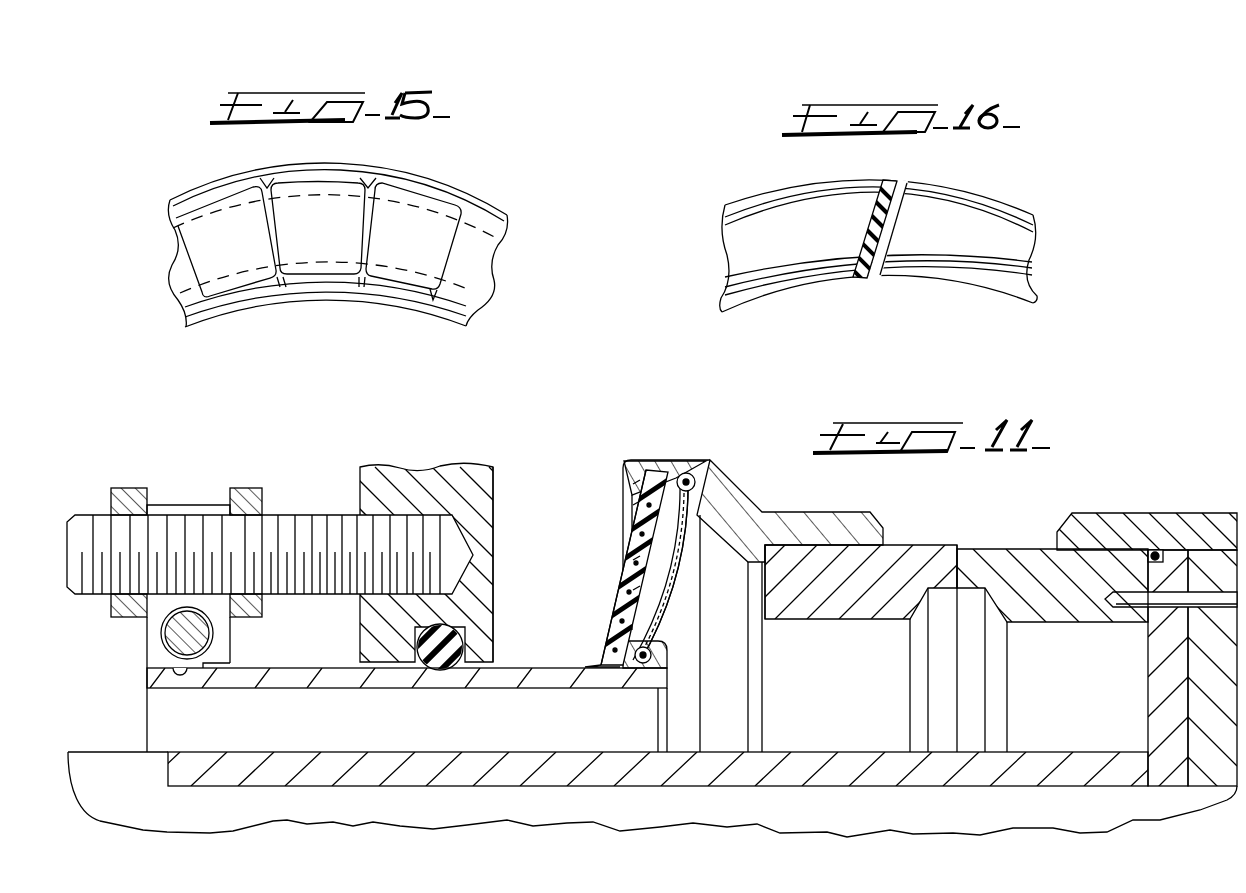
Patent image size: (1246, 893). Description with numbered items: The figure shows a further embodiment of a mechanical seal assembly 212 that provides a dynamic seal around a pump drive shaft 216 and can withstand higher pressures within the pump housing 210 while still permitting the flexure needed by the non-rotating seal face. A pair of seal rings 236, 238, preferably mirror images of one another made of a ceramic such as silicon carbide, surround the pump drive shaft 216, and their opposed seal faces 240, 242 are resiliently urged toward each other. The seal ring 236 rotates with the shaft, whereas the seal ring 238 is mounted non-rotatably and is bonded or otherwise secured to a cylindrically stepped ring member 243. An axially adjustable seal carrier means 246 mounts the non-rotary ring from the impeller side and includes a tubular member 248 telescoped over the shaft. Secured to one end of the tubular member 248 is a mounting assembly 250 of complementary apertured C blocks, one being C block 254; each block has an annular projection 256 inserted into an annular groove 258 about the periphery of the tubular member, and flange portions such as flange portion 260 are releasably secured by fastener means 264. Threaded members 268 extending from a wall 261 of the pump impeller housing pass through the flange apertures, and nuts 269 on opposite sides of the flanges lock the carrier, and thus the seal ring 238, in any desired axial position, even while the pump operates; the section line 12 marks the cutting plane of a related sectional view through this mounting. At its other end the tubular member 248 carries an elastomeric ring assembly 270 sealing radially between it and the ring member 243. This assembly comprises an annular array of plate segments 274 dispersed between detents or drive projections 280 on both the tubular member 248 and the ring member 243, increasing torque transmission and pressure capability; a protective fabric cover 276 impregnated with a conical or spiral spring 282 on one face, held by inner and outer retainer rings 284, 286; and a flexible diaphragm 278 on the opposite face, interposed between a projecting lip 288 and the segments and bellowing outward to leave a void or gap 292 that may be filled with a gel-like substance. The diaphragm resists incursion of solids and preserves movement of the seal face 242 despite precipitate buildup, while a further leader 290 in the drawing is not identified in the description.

In FIG. 11, the pump housing 210 is at (1204, 490).
In FIG. 11, the mechanical seal assembly 212 is at (1058, 503).
In FIG. 11, the pump drive shaft 216 is at (90, 794).
In FIG. 11, the seal ring 236 is at (997, 550).
In FIG. 11, the seal ring 238 is at (820, 612).
In FIG. 11, the seal face 240 is at (953, 575).
In FIG. 11, the seal face 242 is at (957, 548).
In FIG. 15, the cylindrically stepped ring member 243 is at (493, 213).
In FIG. 11, the cylindrically stepped ring member 243 is at (640, 460).
In FIG. 11, the axially adjustable seal carrier means 246 is at (214, 463).
In FIG. 15, the tubular member 248 is at (453, 313).
In FIG. 11, the tubular member 248 is at (293, 682).
In FIG. 11, the mounting assembly 250 is at (118, 671).
In FIG. 11, the C block 254 is at (152, 633).
In FIG. 11, the annular projection 256 is at (200, 667).
In FIG. 11, the annular groove 258 is at (180, 680).
In FIG. 11, the flange portion 260 is at (157, 617).
In FIG. 11, the wall 261 is at (493, 480).
In FIG. 11, the fastener means 264 is at (168, 648).
In FIG. 11, the threaded members 268 is at (330, 512).
In FIG. 11, the nuts 269 is at (125, 488).
In FIG. 11, the elastomeric ring assembly 270 is at (600, 583).
In FIG. 15, the plate segments 274 is at (209, 258).
In FIG. 11, the plate segments 274 is at (668, 587).
In FIG. 16, the protective fabric cover 276 is at (747, 248).
In FIG. 11, the protective fabric cover 276 is at (642, 550).
In FIG. 11, the flexible diaphragm 278 is at (683, 557).
In FIG. 15, the drive projections 280 is at (265, 176).
In FIG. 11, the drive projections 280 is at (672, 477).
In FIG. 16, the spiral spring 282 is at (888, 233).
In FIG. 11, the spiral spring 282 is at (650, 517).
In FIG. 11, the inner retainer ring 284 is at (607, 662).
In FIG. 11, the outer retainer ring 286 is at (632, 482).
In FIG. 11, the projecting lip 288 is at (690, 490).
In FIG. 11, the blade centerline 290 is at (664, 617).
In FIG. 11, the void or gap 292 is at (675, 532).
In FIG. 11, the section line 12 is at (170, 442).